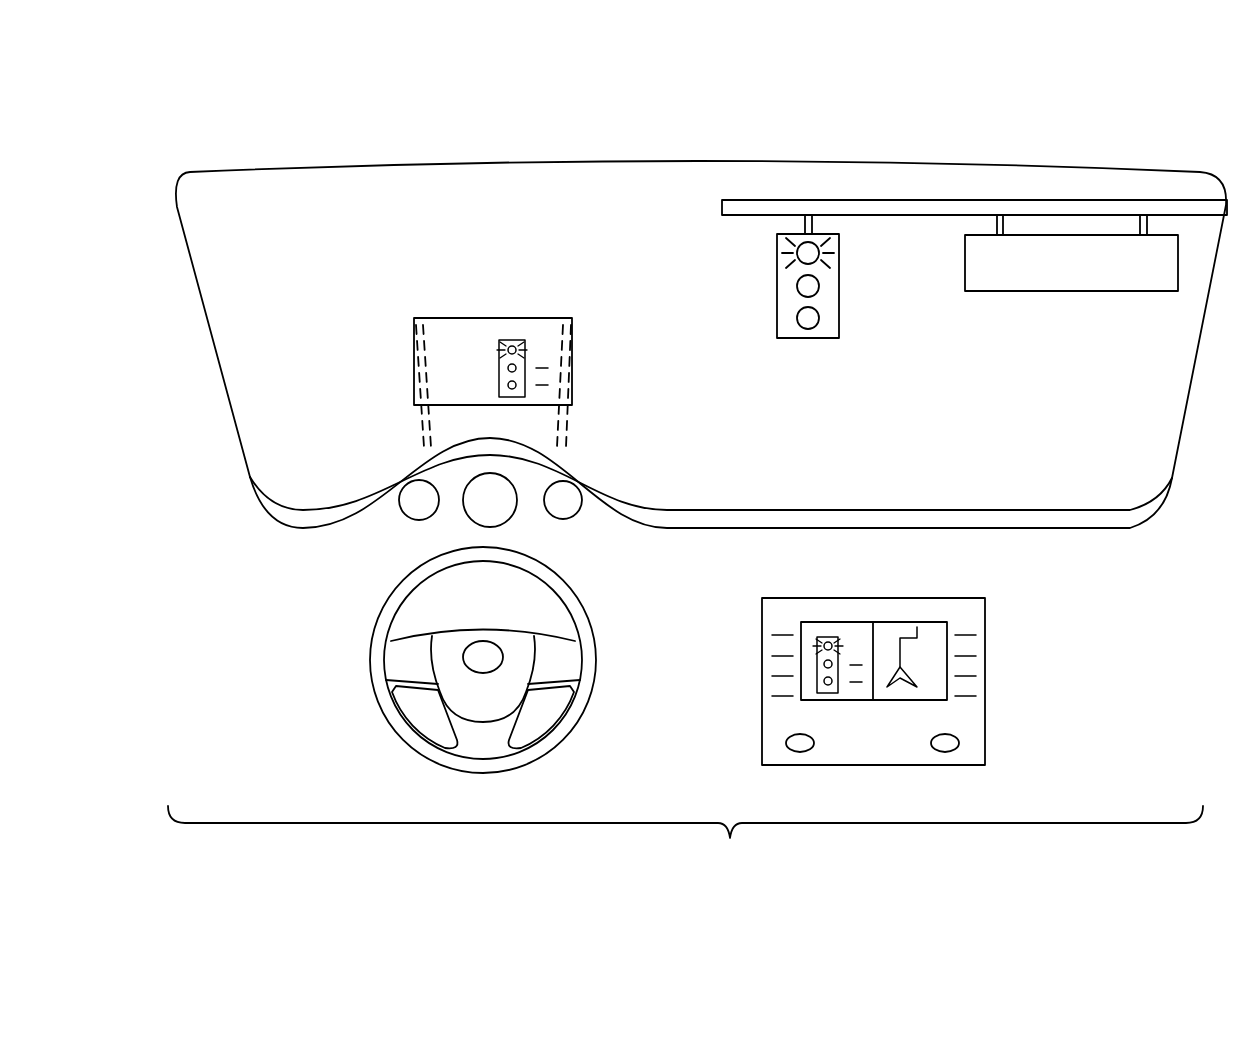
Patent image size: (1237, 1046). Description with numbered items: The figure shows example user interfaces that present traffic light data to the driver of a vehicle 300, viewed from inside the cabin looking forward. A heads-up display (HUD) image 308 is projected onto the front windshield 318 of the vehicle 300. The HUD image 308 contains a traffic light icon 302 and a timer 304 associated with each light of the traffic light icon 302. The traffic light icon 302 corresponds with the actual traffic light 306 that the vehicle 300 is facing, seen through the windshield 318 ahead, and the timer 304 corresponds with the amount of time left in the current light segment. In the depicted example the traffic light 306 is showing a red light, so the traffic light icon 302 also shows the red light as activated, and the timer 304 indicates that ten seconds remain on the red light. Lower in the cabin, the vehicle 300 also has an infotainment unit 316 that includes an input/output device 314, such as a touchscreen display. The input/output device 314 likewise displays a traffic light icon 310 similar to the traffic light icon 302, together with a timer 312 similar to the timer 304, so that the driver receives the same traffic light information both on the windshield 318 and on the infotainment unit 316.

The vehicle 300 is at (277, 113).
The traffic light icon 302 is at (514, 337).
The timer 304 is at (551, 332).
The traffic light 306 is at (777, 292).
The heads-up display (HUD) image 308 is at (440, 318).
The traffic light icon 310 is at (828, 633).
The timer 312 is at (862, 623).
The input/output device 314 is at (930, 620).
The infotainment unit 316 is at (985, 715).
The front windshield 318 is at (405, 180).